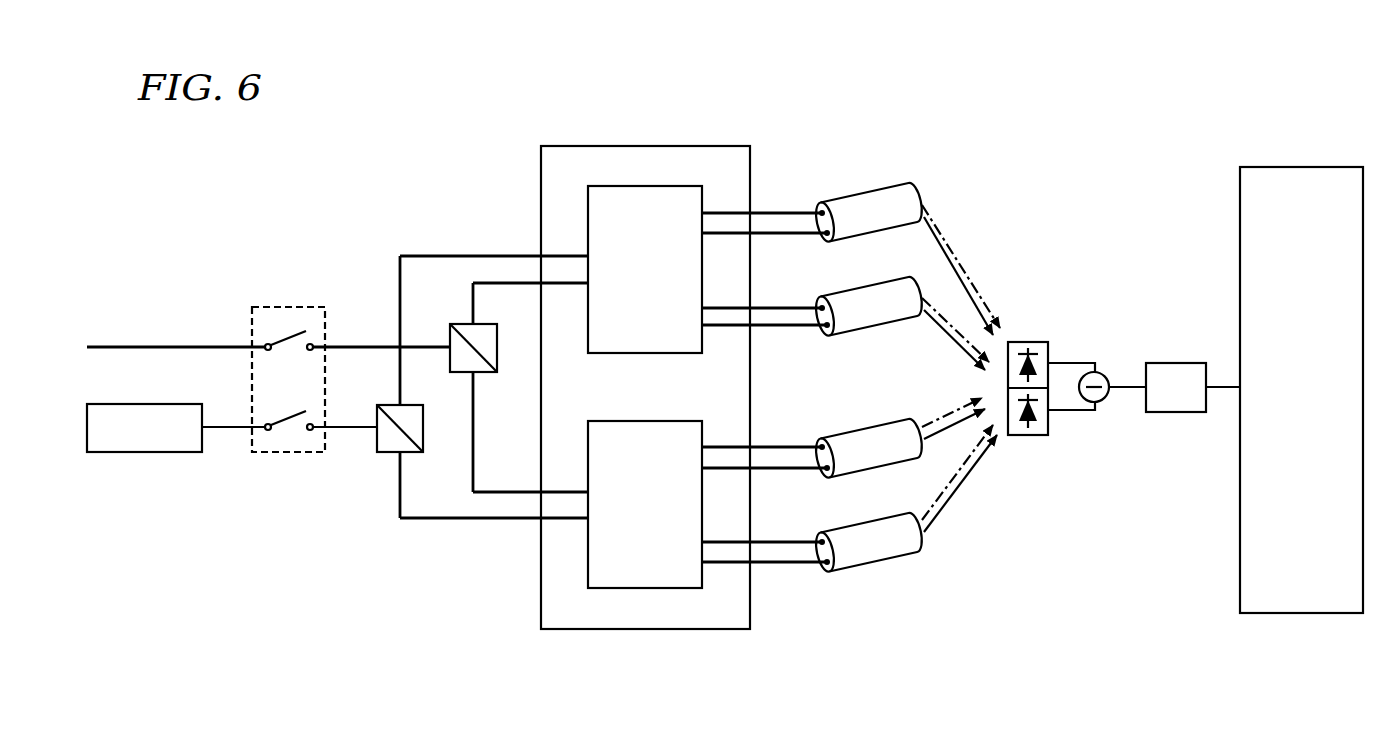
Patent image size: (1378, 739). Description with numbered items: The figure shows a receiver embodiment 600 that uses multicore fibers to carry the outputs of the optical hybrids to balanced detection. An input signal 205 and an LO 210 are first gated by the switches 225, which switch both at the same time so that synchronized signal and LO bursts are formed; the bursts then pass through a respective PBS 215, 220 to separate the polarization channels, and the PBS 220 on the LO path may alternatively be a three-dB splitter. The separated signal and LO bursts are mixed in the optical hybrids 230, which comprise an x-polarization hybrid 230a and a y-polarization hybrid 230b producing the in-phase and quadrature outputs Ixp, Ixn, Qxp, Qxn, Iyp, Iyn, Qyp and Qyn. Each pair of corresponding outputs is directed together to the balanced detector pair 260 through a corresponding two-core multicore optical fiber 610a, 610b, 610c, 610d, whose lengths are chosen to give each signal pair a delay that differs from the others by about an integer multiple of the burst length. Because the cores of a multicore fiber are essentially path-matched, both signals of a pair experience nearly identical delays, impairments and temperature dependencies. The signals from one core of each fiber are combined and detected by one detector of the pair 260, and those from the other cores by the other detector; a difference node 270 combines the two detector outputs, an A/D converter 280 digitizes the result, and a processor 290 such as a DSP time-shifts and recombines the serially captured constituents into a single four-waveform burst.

The receiver embodiment 600 is at (247, 158).
The input signal 205 is at (137, 348).
The LO 210 is at (145, 452).
The PBS 215 is at (463, 324).
The PBS 220 is at (390, 405).
The switches 225 is at (278, 307).
The optical hybrids 230 is at (680, 146).
The hybrid 230a is at (625, 186).
The hybrid 230b is at (632, 588).
The multicore optical fiber 610a is at (886, 190).
The multicore optical fiber 610b is at (886, 284).
The multicore optical fiber 610c is at (886, 426).
The multicore optical fiber 610d is at (886, 520).
The balanced detector pair 260 is at (1030, 342).
The difference node 270 is at (1098, 373).
The A/D converter 280 is at (1158, 363).
The processor 290 is at (1303, 167).